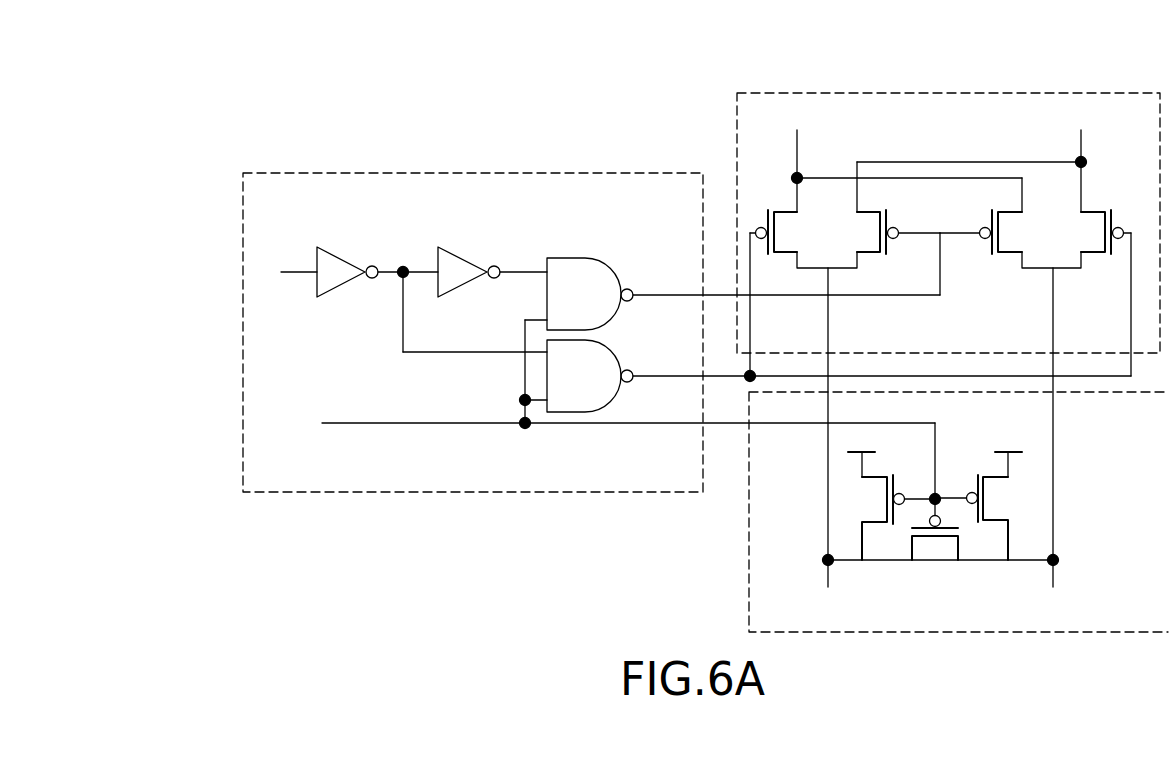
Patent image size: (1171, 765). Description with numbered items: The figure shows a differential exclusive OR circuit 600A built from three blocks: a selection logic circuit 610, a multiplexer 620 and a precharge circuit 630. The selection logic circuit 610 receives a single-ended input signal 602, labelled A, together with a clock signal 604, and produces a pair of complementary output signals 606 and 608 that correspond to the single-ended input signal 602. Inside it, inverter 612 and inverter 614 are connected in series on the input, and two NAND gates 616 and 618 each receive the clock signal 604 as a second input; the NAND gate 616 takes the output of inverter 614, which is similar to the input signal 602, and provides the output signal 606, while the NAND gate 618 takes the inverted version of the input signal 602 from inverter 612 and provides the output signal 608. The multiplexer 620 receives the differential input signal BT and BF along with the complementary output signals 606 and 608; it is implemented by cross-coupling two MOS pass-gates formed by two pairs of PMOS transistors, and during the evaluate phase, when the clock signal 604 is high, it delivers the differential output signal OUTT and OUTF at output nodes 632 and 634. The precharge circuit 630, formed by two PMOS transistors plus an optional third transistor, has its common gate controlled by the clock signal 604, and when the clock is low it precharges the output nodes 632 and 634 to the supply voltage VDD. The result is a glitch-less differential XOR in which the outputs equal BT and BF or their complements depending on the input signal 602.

The differential exclusive OR (XOR) circuit 600A is at (320, 122).
The single-ended input signal 602 is at (262, 256).
The clock signal 604 is at (262, 430).
The complementary output signal 606 is at (660, 295).
The complementary output signal 608 is at (660, 376).
The selection logic circuit 610 is at (465, 480).
The inverter 612 is at (338, 262).
The inverter 614 is at (458, 262).
The NAND gate 616 is at (598, 303).
The NAND gate 618 is at (598, 385).
The multiplexer 620 is at (978, 340).
The precharge circuit 630 is at (962, 620).
The output node 632 is at (824, 558).
The output node 634 is at (1058, 558).